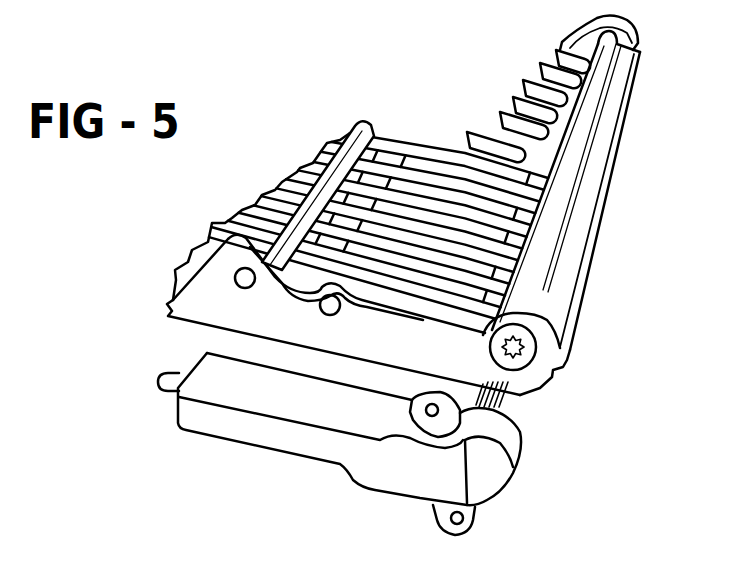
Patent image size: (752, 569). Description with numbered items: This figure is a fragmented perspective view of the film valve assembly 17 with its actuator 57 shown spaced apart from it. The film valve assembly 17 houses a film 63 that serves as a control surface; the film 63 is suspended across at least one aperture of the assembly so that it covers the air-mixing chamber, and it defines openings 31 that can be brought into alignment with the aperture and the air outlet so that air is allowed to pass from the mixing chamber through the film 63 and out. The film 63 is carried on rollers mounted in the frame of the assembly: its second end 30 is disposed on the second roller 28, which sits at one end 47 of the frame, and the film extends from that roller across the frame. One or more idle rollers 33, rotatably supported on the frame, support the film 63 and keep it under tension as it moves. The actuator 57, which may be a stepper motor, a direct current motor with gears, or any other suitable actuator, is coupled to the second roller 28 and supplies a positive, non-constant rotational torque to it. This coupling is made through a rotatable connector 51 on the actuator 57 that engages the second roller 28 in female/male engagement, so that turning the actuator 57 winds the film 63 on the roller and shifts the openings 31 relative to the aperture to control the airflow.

The film valve assembly 17 is at (587, 205).
The second roller 28 is at (555, 235).
The second end 30 is at (623, 49).
The openings 31 is at (442, 163).
The idle rollers 33 is at (303, 195).
The end of the frame 47 is at (610, 185).
The rotatable connector 51 is at (510, 408).
The actuator 57 is at (172, 430).
The film 63 is at (557, 117).